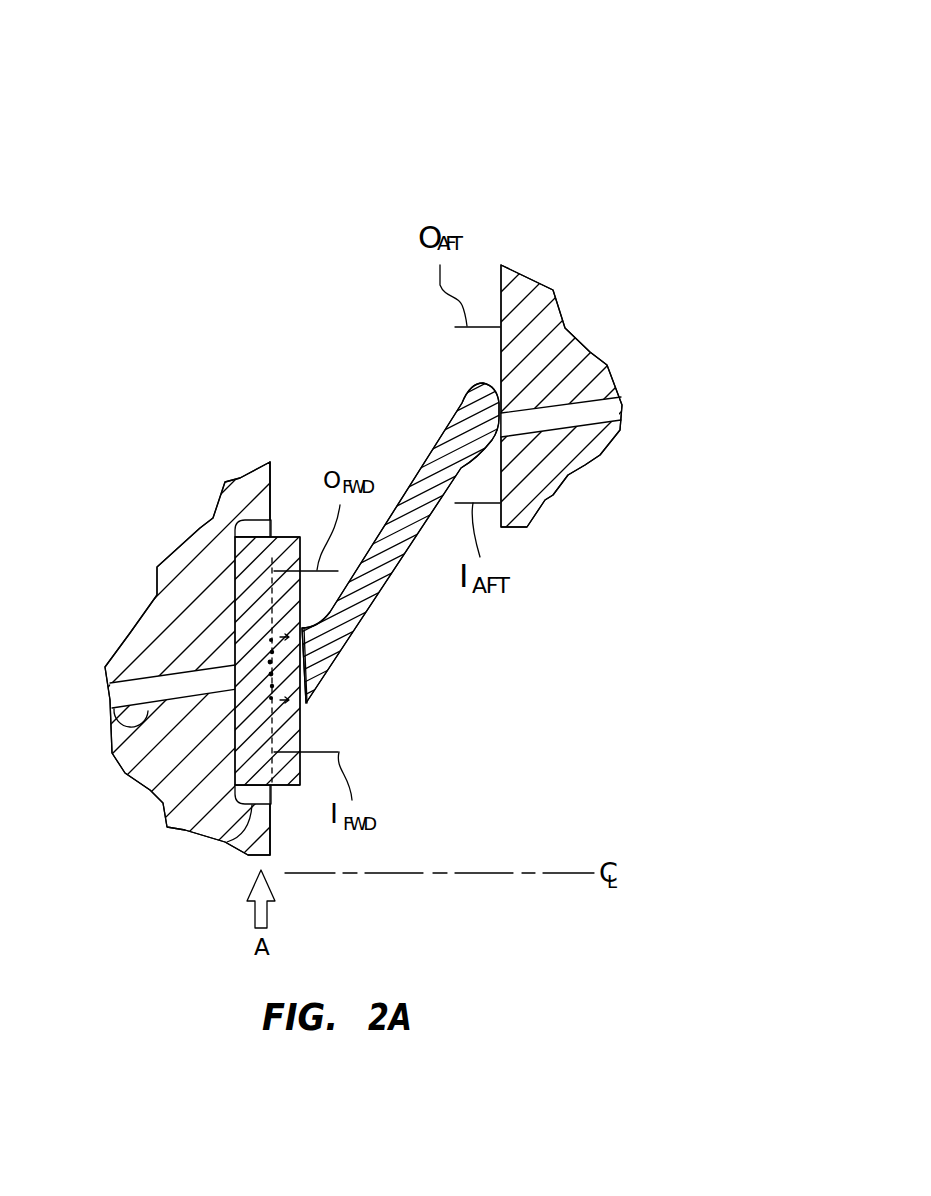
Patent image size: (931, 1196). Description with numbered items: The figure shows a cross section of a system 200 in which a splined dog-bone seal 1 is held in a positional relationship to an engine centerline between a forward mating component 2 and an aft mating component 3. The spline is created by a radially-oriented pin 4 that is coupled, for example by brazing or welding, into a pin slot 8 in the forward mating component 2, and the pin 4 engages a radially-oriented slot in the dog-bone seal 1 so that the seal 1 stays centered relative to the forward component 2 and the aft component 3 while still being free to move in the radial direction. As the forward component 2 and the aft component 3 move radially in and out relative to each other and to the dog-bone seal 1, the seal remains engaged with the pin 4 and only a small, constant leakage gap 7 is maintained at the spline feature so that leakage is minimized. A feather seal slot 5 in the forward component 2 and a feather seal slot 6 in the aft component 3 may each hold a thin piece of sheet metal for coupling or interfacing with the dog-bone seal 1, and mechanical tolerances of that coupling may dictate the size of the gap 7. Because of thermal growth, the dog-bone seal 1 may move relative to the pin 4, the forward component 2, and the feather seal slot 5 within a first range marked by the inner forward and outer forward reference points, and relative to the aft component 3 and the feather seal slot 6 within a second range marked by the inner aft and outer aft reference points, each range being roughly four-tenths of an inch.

The system 200 is at (546, 105).
The splined dog-bone seal 1 is at (450, 413).
The forward mating component 2 is at (130, 638).
The aft mating component 3 is at (465, 450).
The radially-oriented pin 4 is at (252, 522).
The feather seal slot 5 is at (130, 730).
The feather seal slot 6 is at (555, 432).
The leakage gap 7 is at (310, 663).
The pin slot 8 is at (226, 841).